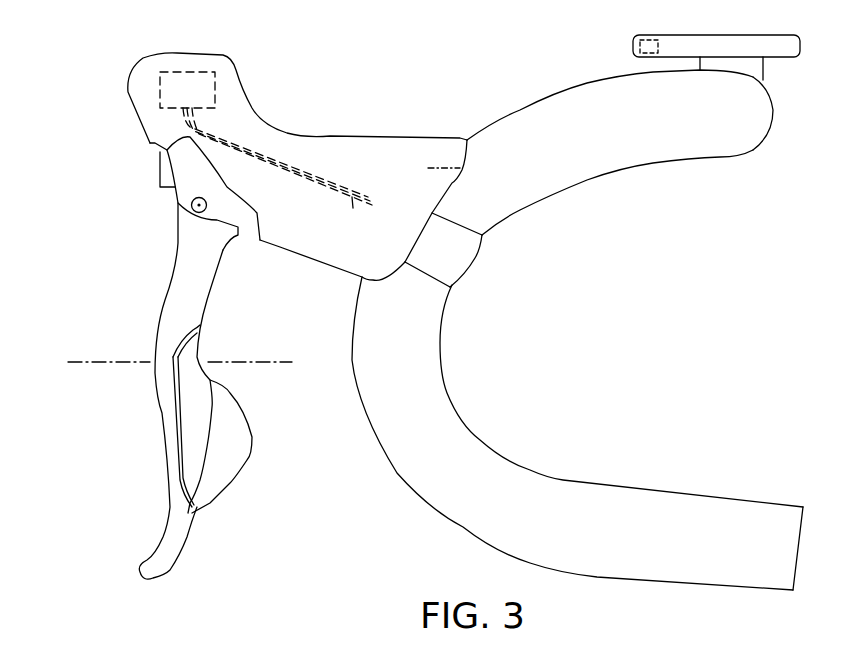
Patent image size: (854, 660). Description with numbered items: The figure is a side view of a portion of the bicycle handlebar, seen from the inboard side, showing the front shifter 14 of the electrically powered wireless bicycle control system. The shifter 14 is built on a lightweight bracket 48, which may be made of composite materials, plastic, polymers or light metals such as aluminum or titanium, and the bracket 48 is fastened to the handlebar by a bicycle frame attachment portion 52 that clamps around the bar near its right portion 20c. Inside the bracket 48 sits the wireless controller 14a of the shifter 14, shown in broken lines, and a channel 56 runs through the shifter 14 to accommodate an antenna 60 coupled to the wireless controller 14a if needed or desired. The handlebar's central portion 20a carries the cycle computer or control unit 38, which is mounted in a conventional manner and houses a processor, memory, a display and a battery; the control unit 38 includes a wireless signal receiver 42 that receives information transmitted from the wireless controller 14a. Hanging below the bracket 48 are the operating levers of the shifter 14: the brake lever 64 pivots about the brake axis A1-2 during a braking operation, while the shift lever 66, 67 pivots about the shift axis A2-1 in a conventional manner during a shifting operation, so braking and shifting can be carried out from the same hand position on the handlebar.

The front shifter 14 is at (104, 91).
The wireless controller 14a is at (128, 90).
The central portion 20a is at (777, 123).
The right portion 20c is at (563, 128).
The control unit 38 is at (737, 43).
The wireless signal receiver 42 is at (638, 47).
The bracket 48 is at (378, 165).
The bicycle frame attachment portion 52 is at (462, 183).
The channel 56 is at (318, 167).
The antenna 60 is at (353, 203).
The brake lever 64 is at (160, 317).
The shift lever 66 is at (223, 460).
The shift lever 67 is at (187, 357).
The brake lever pivot axis A1-2 is at (200, 207).
The shift lever pivot axis A2-1 is at (85, 363).